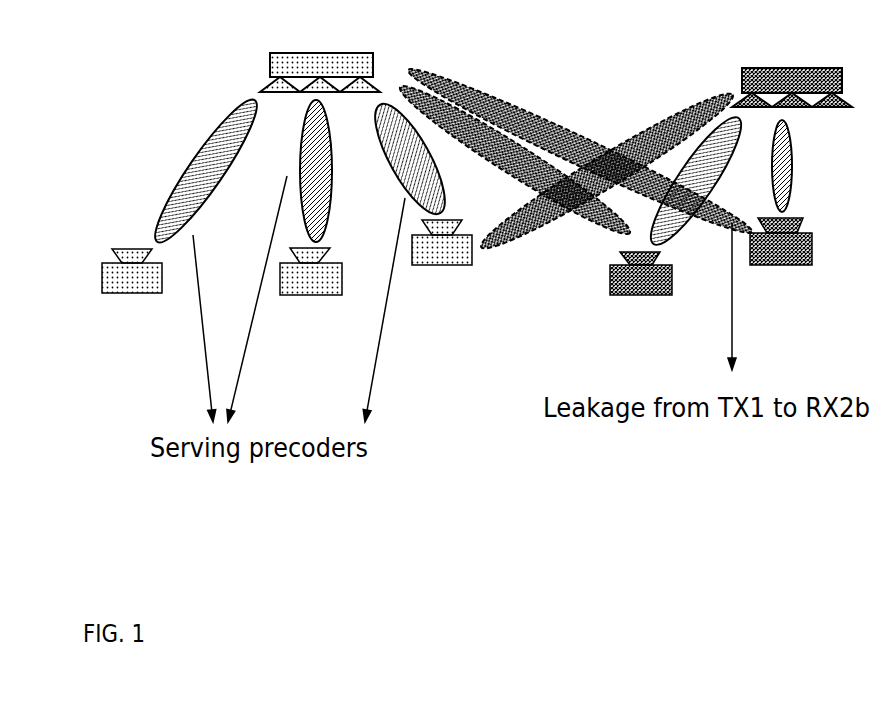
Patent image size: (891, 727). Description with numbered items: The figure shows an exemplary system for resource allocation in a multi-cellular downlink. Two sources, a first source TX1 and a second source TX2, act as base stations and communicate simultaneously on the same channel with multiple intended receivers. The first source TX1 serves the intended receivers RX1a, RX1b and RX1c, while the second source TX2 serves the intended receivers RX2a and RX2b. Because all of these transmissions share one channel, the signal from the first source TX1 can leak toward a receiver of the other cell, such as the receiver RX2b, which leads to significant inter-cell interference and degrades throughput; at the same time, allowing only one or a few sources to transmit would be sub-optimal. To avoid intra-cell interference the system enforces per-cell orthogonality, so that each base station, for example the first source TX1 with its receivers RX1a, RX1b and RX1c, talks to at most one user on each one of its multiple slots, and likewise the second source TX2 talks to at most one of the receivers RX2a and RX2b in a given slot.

The source TX1 is at (320, 54).
The source TX2 is at (792, 71).
The intended receiver RX1a is at (182, 235).
The intended receiver RX1b is at (308, 241).
The intended receiver RX1c is at (421, 221).
The intended receiver RX2a is at (670, 243).
The intended receiver RX2b is at (786, 234).